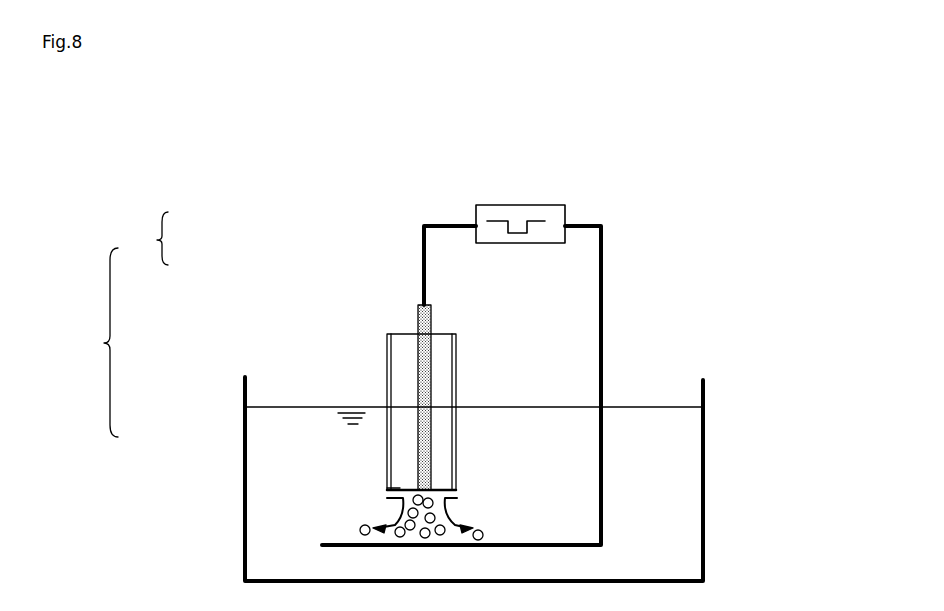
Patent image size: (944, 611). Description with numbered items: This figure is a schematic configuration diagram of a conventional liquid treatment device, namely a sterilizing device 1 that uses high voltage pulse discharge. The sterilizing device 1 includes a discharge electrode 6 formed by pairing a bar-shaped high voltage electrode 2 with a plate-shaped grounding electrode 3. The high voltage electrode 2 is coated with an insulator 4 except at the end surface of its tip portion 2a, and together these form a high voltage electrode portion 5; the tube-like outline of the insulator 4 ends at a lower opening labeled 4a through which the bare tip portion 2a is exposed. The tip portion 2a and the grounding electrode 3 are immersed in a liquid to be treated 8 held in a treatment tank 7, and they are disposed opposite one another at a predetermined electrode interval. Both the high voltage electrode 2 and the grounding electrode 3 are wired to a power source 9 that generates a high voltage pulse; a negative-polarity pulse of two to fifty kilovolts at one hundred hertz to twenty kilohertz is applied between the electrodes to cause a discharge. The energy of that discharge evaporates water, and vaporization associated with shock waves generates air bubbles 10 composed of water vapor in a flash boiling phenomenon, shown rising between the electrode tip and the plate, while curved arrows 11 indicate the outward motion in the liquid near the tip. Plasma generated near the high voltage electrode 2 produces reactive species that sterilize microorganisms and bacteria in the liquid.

The sterilizing device 1 is at (615, 268).
The high voltage electrode 2 is at (420, 318).
The tip portion 2a is at (413, 485).
The grounding electrode 3 is at (322, 543).
The insulator 4 is at (397, 357).
The tube tip opening 4a is at (392, 487).
The high voltage electrode portion 5 is at (144, 258).
The discharge electrode 6 is at (87, 343).
The tank 7 is at (703, 475).
The liquid to be treated 8 is at (670, 553).
The power source 9 is at (527, 210).
The air bubbles 10 is at (427, 503).
The liquid flow 11 is at (450, 515).